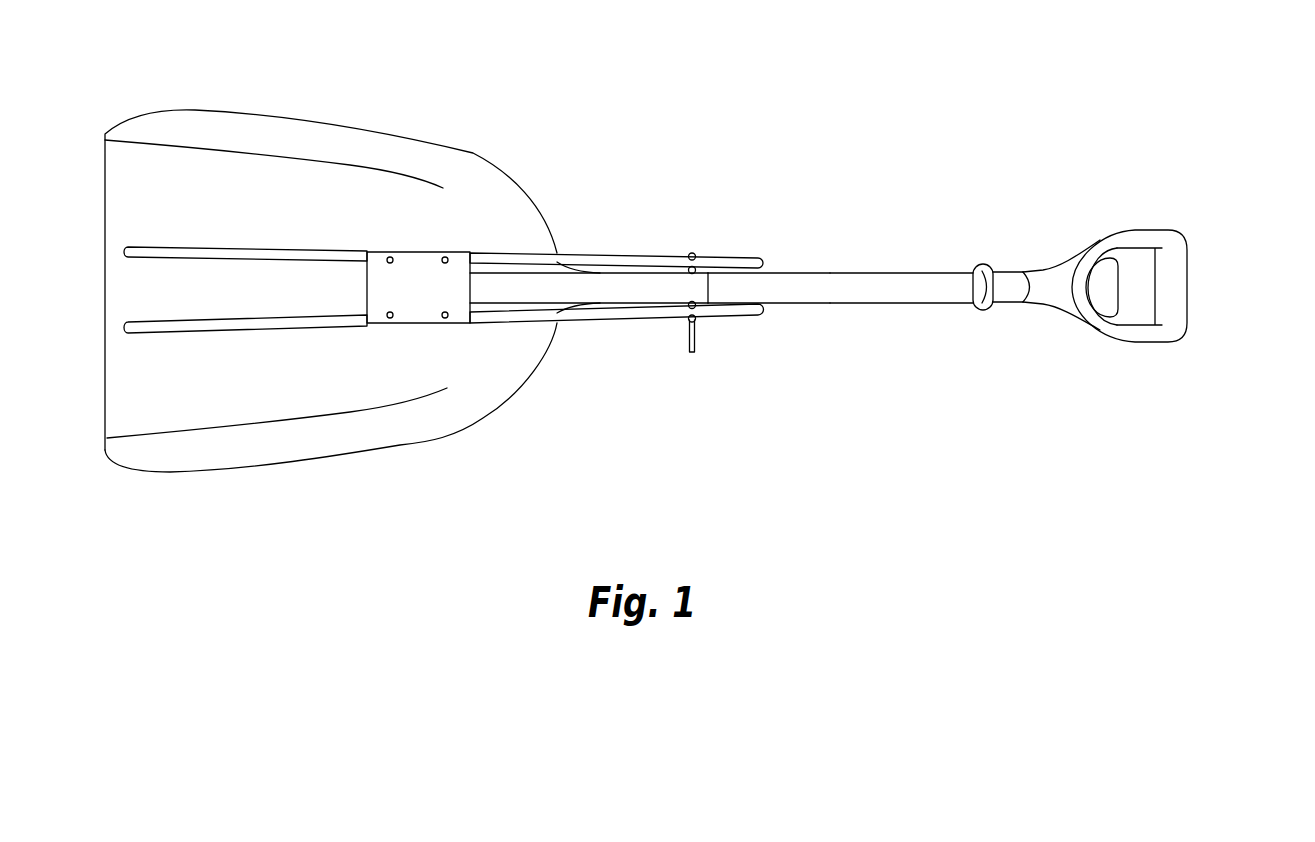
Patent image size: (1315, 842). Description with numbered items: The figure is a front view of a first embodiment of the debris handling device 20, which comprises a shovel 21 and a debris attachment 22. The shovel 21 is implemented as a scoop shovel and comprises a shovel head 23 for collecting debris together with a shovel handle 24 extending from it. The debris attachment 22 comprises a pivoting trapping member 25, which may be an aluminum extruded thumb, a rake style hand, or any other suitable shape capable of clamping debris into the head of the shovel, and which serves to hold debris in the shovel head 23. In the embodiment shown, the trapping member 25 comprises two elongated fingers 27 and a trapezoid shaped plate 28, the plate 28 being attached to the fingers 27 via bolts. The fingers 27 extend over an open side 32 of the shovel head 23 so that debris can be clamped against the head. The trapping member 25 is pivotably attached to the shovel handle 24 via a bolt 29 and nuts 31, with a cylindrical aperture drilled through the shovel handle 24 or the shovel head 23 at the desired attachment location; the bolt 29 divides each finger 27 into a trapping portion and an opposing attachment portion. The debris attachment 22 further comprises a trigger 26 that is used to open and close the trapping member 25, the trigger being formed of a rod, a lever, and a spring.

The first embodiment of the debris handling device 20 is at (958, 208).
The shovel 21 is at (1017, 293).
The debris attachment 22 is at (797, 303).
The shovel head 23 is at (295, 138).
The shovel handle 24 is at (870, 288).
The trapping member 25 is at (503, 322).
The trigger 26 is at (1122, 277).
The elongated fingers 27 is at (240, 254).
The trapezoid shaped plate 28 is at (387, 298).
The bolt 29 is at (688, 343).
The nuts 31 is at (692, 253).
The open side 32 is at (362, 223).